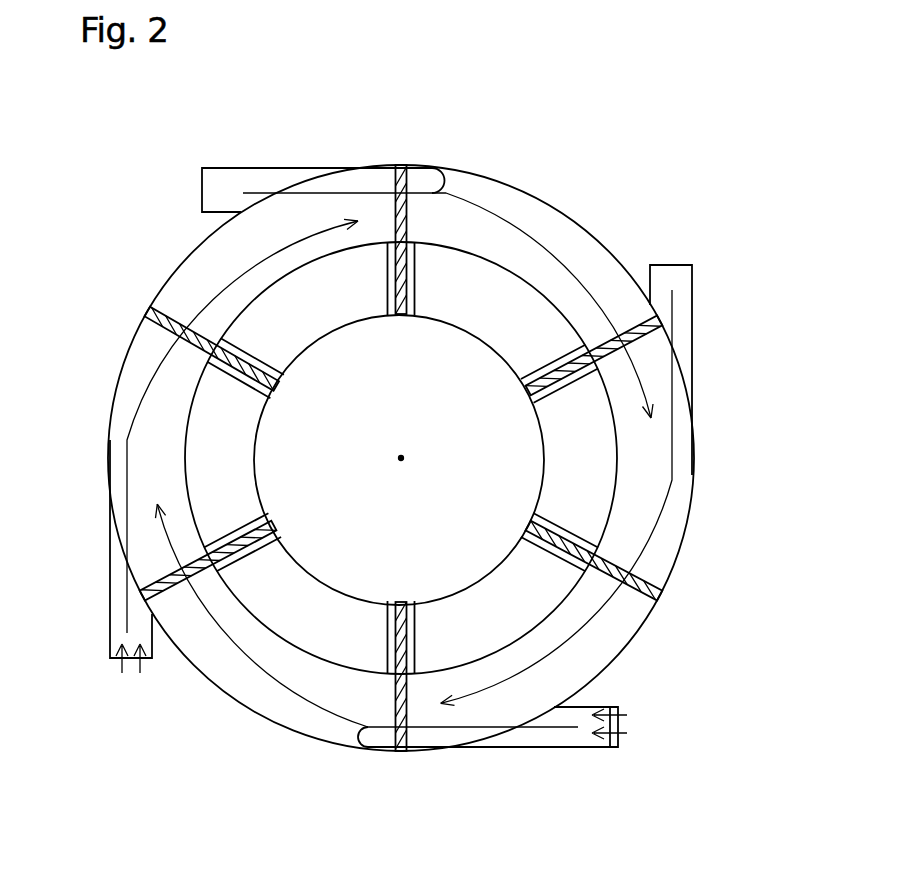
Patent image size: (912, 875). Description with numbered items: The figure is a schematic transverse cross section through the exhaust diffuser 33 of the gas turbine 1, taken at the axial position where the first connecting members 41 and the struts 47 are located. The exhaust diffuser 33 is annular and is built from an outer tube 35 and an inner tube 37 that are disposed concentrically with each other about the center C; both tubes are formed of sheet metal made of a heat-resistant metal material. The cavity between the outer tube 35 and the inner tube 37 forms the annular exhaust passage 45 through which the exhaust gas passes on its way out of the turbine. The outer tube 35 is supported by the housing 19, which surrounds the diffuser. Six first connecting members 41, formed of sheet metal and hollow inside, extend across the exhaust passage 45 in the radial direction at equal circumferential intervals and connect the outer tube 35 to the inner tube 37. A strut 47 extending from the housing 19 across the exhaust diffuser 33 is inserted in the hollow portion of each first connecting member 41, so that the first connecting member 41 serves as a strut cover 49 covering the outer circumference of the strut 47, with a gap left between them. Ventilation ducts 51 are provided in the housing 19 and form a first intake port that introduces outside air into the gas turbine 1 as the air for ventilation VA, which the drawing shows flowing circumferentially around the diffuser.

The gas turbine 1 is at (70, 161).
The housing 19 is at (518, 188).
The exhaust diffuser 33 is at (419, 421).
The outer tube 35 is at (535, 285).
The inner tube 37 is at (457, 323).
The first connecting member 41 is at (416, 283).
The exhaust passage 45 is at (237, 428).
The strut 47 is at (410, 219).
The strut cover 49 is at (397, 458).
The ventilation duct 51 is at (203, 186).
The air for ventilation VA is at (440, 191).
The center axis C is at (401, 463).